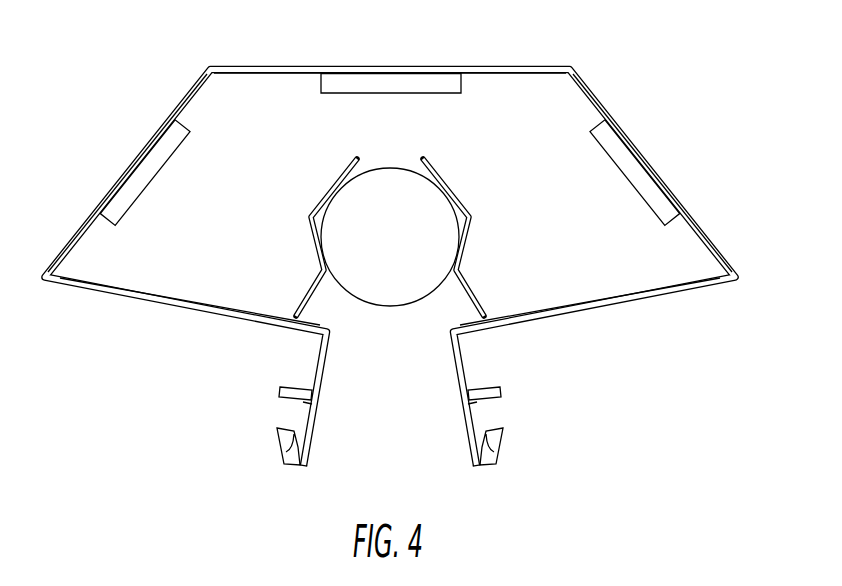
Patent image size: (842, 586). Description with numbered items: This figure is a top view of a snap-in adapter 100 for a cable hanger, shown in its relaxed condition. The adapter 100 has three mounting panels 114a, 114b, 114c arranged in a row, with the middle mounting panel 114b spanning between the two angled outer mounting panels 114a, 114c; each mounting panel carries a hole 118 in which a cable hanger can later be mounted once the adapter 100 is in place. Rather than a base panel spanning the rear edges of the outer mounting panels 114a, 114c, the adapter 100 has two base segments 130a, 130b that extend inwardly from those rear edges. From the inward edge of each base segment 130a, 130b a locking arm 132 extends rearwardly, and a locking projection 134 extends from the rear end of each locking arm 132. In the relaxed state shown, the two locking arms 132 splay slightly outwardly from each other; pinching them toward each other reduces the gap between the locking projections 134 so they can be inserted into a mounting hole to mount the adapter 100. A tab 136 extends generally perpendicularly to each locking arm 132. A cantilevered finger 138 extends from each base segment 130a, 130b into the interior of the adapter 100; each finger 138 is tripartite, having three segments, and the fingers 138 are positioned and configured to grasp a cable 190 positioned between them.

The snap-in adapter 100 is at (704, 179).
The mounting panel 114a is at (183, 97).
The mounting panel 114b is at (488, 66).
The mounting panel 114c is at (600, 98).
The hole 118 is at (150, 157).
The base segment 130a is at (174, 310).
The base segment 130b is at (606, 310).
The locking arm 132 is at (296, 387).
The locking projection 134 is at (290, 447).
The tab 136 is at (310, 407).
The cantilevered finger 138 is at (314, 206).
The cable 190 is at (398, 172).